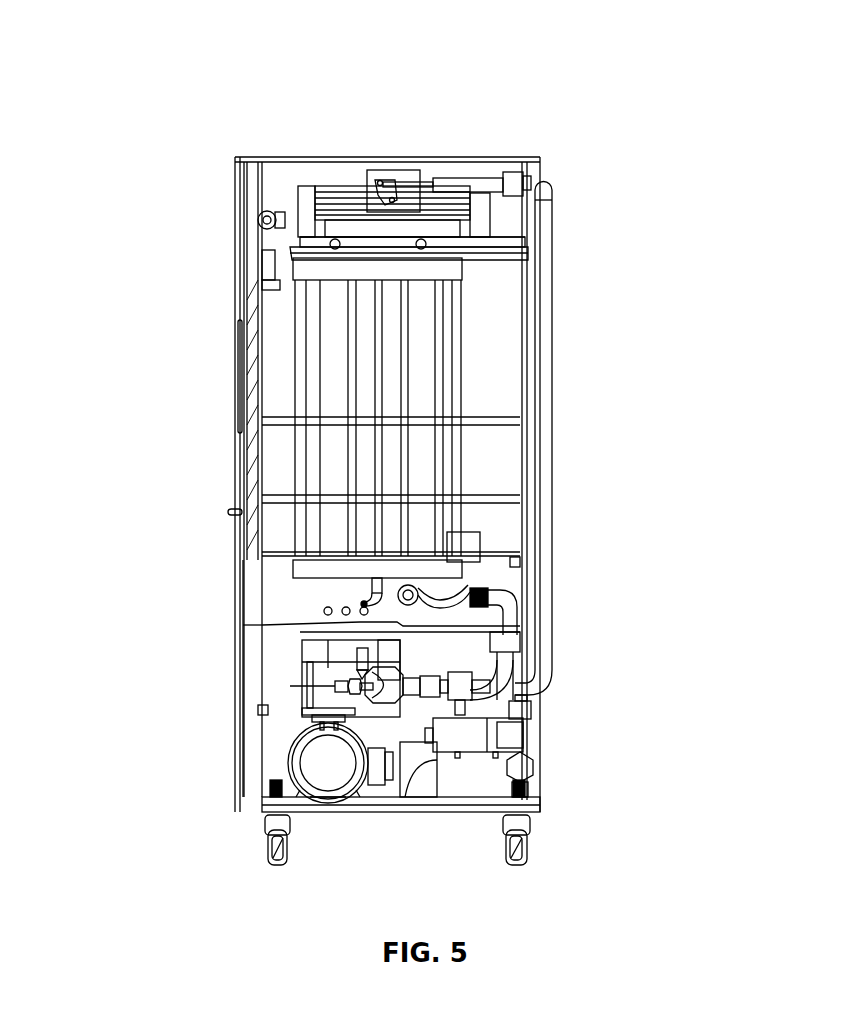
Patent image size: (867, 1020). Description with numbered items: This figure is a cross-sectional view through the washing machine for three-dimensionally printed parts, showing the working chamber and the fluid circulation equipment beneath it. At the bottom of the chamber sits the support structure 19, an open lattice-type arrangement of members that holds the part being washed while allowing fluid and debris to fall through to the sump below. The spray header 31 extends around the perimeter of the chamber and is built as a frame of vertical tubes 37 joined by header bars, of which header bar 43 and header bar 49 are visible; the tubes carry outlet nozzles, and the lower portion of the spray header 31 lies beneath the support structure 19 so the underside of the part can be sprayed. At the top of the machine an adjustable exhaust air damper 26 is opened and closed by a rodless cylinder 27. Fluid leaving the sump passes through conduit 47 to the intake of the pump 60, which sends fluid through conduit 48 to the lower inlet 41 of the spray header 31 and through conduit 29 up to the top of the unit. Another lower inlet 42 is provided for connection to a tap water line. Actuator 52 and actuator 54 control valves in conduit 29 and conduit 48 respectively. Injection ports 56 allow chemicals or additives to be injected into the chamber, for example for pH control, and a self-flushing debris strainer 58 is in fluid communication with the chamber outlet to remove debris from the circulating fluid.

The support structure 19 is at (505, 548).
The adjustable exhaust air damper 26 is at (375, 170).
The rodless cylinder 27 is at (455, 186).
The conduit 29 is at (540, 415).
The spray header 31 is at (335, 318).
The vertical tubes 37 is at (458, 340).
The lower inlet 41 is at (475, 582).
The lower inlet 42 is at (340, 614).
The header bar 43 is at (308, 572).
The conduit 47 is at (410, 767).
The conduit 48 is at (495, 597).
The header bar 49 is at (450, 268).
The actuator 52 is at (512, 733).
The actuator 54 is at (462, 733).
The injection ports 56 is at (360, 614).
The self-flushing debris strainer 58 is at (325, 674).
The pump 60 is at (320, 763).